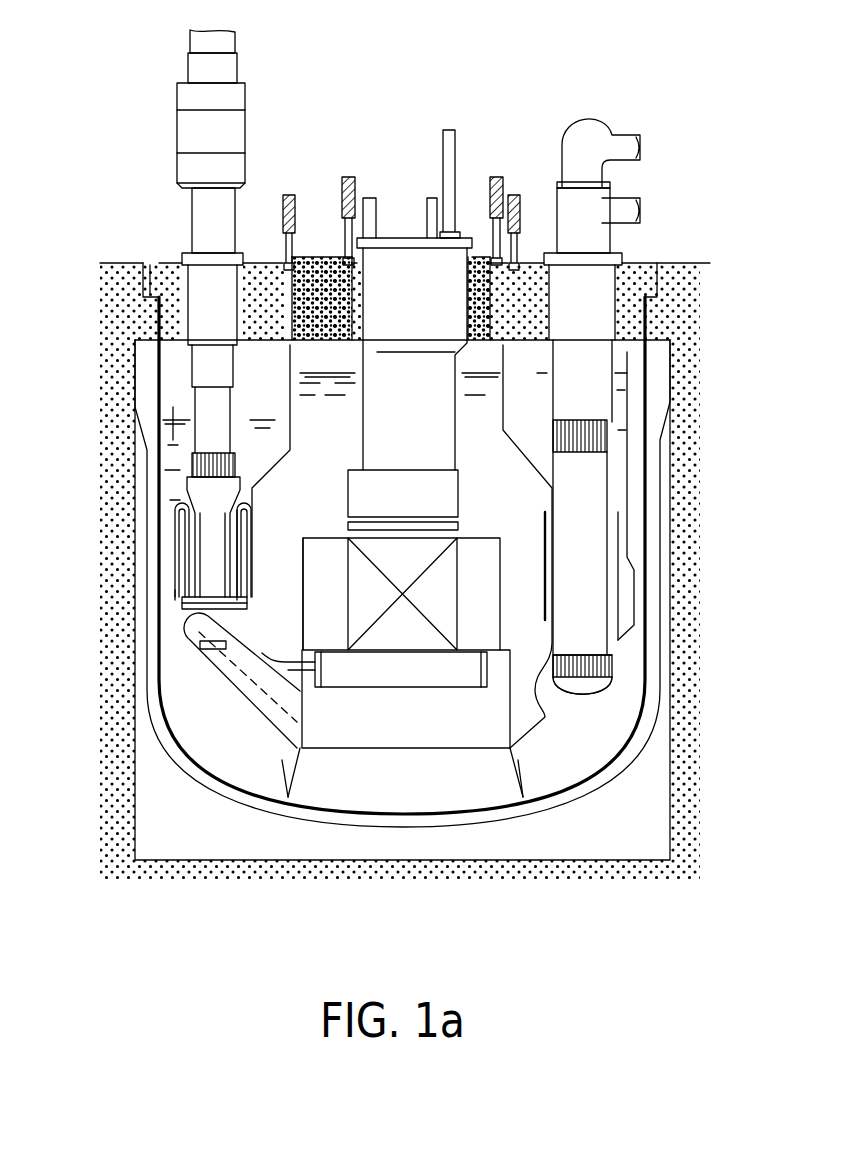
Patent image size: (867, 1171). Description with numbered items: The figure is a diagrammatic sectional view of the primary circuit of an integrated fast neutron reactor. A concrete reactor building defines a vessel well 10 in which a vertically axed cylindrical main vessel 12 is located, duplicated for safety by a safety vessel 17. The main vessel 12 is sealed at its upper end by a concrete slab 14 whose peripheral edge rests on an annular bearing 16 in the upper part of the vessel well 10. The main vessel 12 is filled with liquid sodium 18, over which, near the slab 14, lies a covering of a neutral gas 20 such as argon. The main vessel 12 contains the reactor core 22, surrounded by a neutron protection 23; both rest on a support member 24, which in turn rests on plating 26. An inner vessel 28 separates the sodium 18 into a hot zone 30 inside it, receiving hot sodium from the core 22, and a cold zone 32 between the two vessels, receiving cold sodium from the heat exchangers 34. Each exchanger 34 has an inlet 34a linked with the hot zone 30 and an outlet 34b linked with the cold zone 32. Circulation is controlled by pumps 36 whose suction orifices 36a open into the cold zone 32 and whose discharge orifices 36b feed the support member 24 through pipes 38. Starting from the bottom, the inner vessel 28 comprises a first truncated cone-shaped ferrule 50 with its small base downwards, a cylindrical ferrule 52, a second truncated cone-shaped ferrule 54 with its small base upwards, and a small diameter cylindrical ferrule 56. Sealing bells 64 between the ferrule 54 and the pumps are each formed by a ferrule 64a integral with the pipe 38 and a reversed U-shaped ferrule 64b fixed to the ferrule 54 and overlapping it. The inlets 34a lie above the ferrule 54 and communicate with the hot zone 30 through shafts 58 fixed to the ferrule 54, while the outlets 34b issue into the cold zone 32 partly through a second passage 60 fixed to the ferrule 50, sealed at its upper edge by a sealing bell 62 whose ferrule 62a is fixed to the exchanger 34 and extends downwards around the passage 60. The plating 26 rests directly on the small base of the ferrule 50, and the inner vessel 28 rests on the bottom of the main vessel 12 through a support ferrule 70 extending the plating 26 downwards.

The vessel well 10 is at (98, 846).
The main vessel 12 is at (170, 685).
The concrete slab 14 is at (178, 290).
The annular bearing 16 is at (150, 265).
The safety vessel 17 is at (175, 750).
The liquid sodium 18 is at (170, 418).
The neutral gas covering 20 is at (275, 408).
The reactor core 22 is at (433, 587).
The neutron protection 23 is at (338, 606).
The support member 24 is at (411, 683).
The plating 26 is at (483, 734).
The inner vessel 28 is at (540, 738).
The hot zone 30 is at (513, 513).
The cold zone 32 is at (410, 798).
The heat exchanger 34 is at (590, 490).
The exchanger inlet 34a is at (593, 433).
The exchanger outlet 34b is at (587, 670).
The pump 36 is at (195, 585).
The suction orifice 36a is at (195, 465).
The discharge orifice 36b is at (202, 632).
The pipe 38 is at (290, 680).
The first truncated cone-shaped ferrule 50 is at (263, 727).
The cylindrical ferrule 52 is at (182, 604).
The second truncated cone-shaped ferrule 54 is at (283, 450).
The small diameter cylindrical ferrule 56 is at (290, 367).
The shaft 58 is at (627, 358).
The second passage 60 is at (605, 612).
The sealing bell 62 is at (617, 507).
The ferrule 62a is at (620, 583).
The sealing bell 64 is at (175, 520).
The ferrule 64a is at (243, 523).
The reversed U-shaped ferrule 64b is at (227, 577).
The support ferrule 70 is at (515, 755).